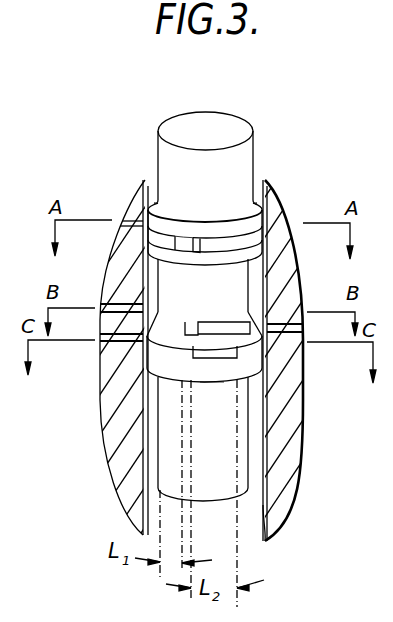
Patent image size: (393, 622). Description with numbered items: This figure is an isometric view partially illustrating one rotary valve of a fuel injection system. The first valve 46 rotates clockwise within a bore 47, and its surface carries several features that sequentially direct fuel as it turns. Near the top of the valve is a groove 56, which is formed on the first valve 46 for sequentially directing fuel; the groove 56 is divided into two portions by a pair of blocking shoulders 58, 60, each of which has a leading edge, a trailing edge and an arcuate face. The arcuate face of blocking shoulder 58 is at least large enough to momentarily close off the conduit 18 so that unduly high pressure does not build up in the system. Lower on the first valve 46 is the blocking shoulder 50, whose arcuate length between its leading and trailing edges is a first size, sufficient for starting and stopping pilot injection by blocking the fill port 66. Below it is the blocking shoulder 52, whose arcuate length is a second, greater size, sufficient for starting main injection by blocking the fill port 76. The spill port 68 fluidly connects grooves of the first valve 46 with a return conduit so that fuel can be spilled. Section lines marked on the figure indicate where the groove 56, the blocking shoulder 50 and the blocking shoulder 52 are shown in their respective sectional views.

The conduit 18 is at (140, 196).
The first valve 46 is at (232, 130).
The bore 47 is at (263, 528).
The blocking shoulder 50 is at (176, 318).
The blocking shoulder 52 is at (212, 384).
The groove 56 is at (224, 253).
The blocking shoulder 58 is at (185, 240).
The blocking shoulder 60 is at (283, 210).
The fill port 66 is at (131, 292).
The spill port 68 is at (296, 336).
The fill port 76 is at (127, 342).